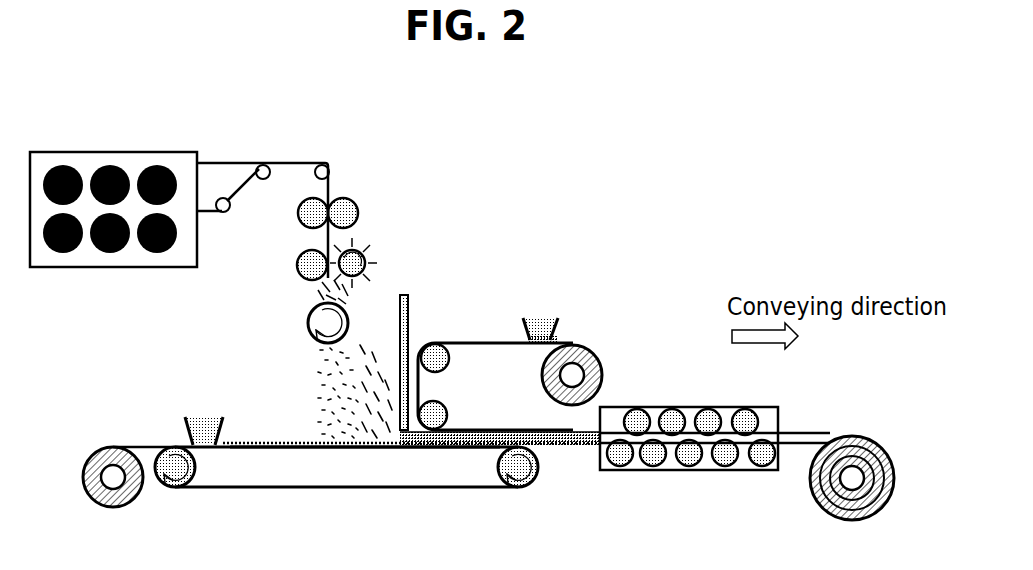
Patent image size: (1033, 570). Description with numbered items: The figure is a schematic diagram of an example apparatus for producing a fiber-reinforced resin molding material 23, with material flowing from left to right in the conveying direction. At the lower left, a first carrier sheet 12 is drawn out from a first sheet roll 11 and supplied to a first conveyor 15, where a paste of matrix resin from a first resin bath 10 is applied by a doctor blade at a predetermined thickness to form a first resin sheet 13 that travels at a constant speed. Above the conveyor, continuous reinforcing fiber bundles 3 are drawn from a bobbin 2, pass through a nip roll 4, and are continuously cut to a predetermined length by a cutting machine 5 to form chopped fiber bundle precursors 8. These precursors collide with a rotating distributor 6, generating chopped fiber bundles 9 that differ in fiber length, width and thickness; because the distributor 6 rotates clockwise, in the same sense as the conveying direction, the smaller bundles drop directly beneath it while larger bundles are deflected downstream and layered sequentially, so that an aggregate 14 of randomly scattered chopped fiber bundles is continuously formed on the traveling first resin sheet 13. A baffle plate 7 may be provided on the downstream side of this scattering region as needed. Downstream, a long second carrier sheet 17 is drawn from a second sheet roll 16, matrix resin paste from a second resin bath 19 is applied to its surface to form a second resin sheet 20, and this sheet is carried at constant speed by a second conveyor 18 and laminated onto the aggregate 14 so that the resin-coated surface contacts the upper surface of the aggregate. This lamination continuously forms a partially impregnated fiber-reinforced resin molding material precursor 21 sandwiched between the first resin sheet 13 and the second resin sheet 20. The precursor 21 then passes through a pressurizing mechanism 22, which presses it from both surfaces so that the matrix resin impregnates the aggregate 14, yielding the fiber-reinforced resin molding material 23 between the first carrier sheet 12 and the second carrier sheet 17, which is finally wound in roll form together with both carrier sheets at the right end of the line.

The bobbin 2 is at (173, 163).
The continuous reinforcing fiber bundle 3 is at (245, 160).
The nip roll 4 is at (362, 208).
The cutting machine 5 is at (380, 245).
The distributor 6 is at (307, 326).
The baffle plate 7 is at (409, 295).
The chopped fiber bundle precursor 8 is at (320, 292).
The chopped fiber bundle 9 is at (302, 398).
The first resin bath 10 is at (198, 412).
The first sheet roll 11 is at (113, 453).
The first carrier sheet 12 is at (157, 440).
The first resin sheet 13 is at (245, 440).
The aggregate comprising chopped fiber bundles 14 is at (362, 457).
The first conveyor 15 is at (297, 468).
The second sheet roll 16 is at (603, 370).
The second carrier sheet 17 is at (558, 341).
The second conveyor 18 is at (447, 408).
The second resin bath 19 is at (543, 327).
The second resin sheet 20 is at (463, 338).
The fiber-reinforced resin molding material precursor 21 is at (553, 448).
The pressurizing mechanism 22 is at (673, 475).
The fiber-reinforced resin molding material 23 is at (823, 493).